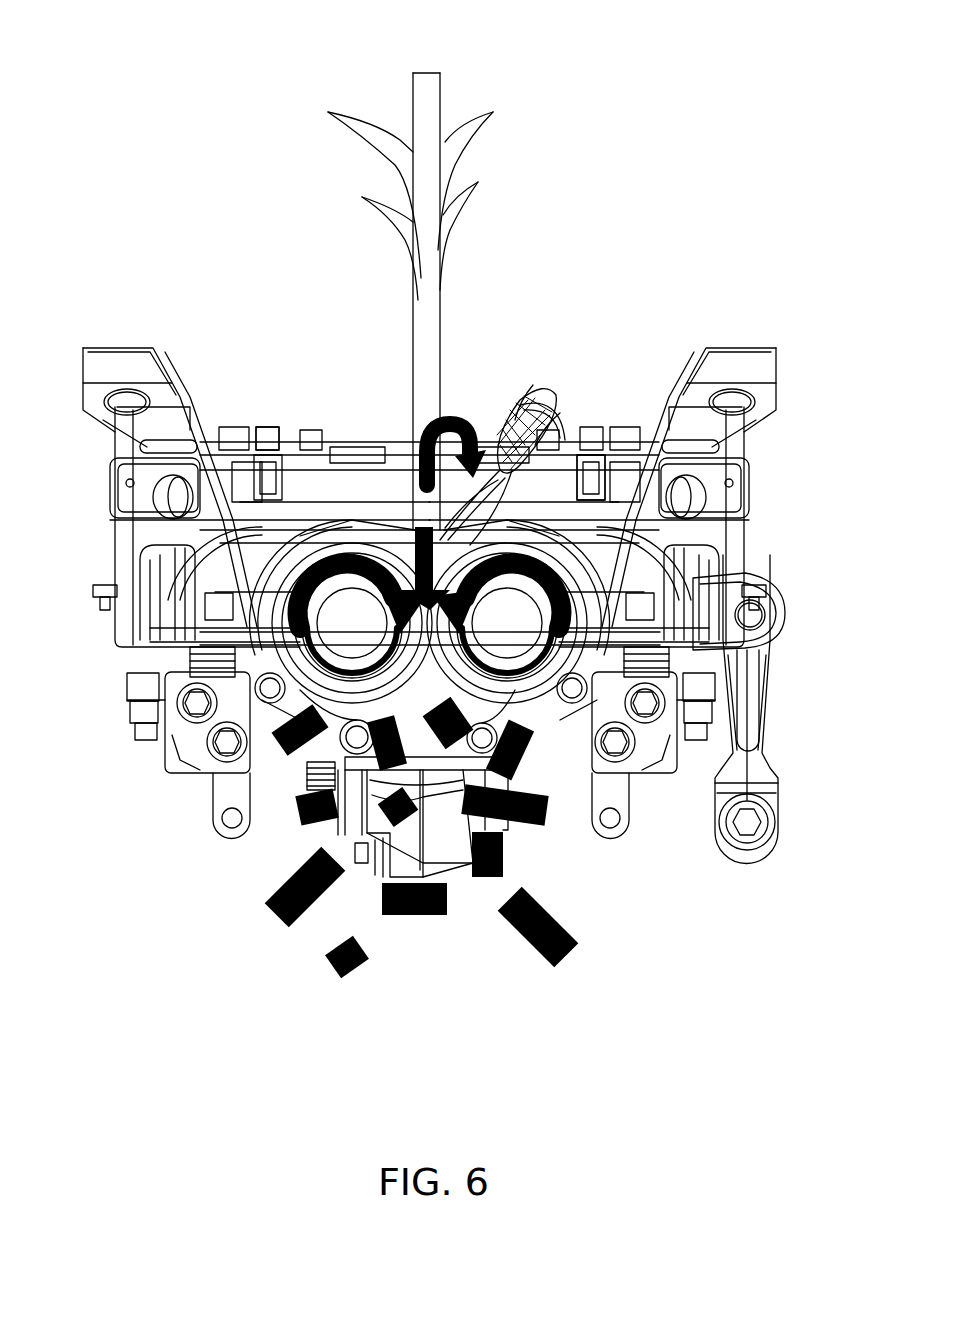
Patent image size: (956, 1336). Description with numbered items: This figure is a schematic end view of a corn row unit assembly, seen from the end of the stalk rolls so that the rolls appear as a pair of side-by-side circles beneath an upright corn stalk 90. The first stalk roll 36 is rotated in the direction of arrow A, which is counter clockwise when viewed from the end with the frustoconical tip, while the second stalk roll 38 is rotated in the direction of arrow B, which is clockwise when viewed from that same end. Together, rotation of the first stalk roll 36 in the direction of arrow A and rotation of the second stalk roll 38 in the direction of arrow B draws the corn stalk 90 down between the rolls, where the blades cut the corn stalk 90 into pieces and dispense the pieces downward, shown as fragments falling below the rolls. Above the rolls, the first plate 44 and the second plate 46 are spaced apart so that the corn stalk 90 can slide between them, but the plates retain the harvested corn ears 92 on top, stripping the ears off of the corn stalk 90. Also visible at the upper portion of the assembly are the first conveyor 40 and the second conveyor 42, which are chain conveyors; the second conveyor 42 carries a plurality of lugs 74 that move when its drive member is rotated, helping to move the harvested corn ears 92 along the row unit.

The first stalk roll 36 is at (552, 590).
The second stalk roll 38 is at (187, 705).
The first conveyor 40 is at (583, 530).
The second conveyor 42 is at (243, 470).
The first plate 44 is at (633, 487).
The second plate 46 is at (397, 560).
The lugs 74 is at (268, 445).
The corn stalk 90 is at (425, 296).
The harvested corn ears 92 is at (542, 402).
The arrow A is at (560, 540).
The arrow B is at (348, 560).